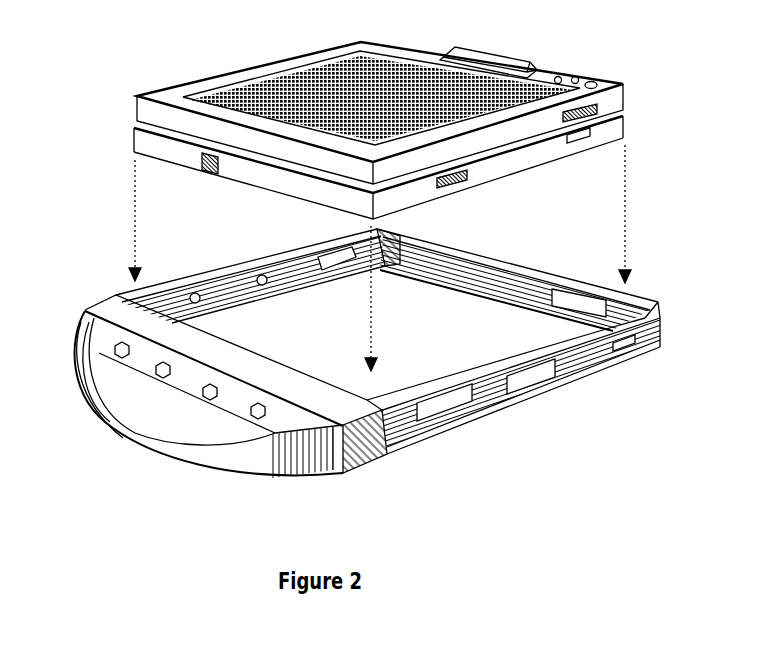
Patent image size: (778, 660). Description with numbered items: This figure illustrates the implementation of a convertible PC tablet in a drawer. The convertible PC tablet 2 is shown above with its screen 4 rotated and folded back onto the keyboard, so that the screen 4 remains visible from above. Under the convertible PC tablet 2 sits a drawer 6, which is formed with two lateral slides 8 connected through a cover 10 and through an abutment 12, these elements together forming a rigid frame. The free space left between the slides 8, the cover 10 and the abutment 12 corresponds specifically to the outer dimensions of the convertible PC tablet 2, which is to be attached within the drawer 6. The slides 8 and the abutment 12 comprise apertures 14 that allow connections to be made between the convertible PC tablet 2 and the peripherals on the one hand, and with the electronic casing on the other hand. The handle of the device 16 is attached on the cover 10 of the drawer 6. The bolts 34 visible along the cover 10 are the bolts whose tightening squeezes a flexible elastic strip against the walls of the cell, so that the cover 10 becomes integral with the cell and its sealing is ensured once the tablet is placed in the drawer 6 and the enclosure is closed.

The convertible PC tablet 2 is at (183, 61).
The screen 4 is at (503, 107).
The drawer 6 is at (501, 425).
The lateral slides 8 is at (237, 287).
The cover 10 is at (233, 357).
The abutment 12 is at (478, 273).
The apertures 14 is at (327, 262).
The handle of the device 16 is at (167, 452).
The bolt 34 is at (151, 376).